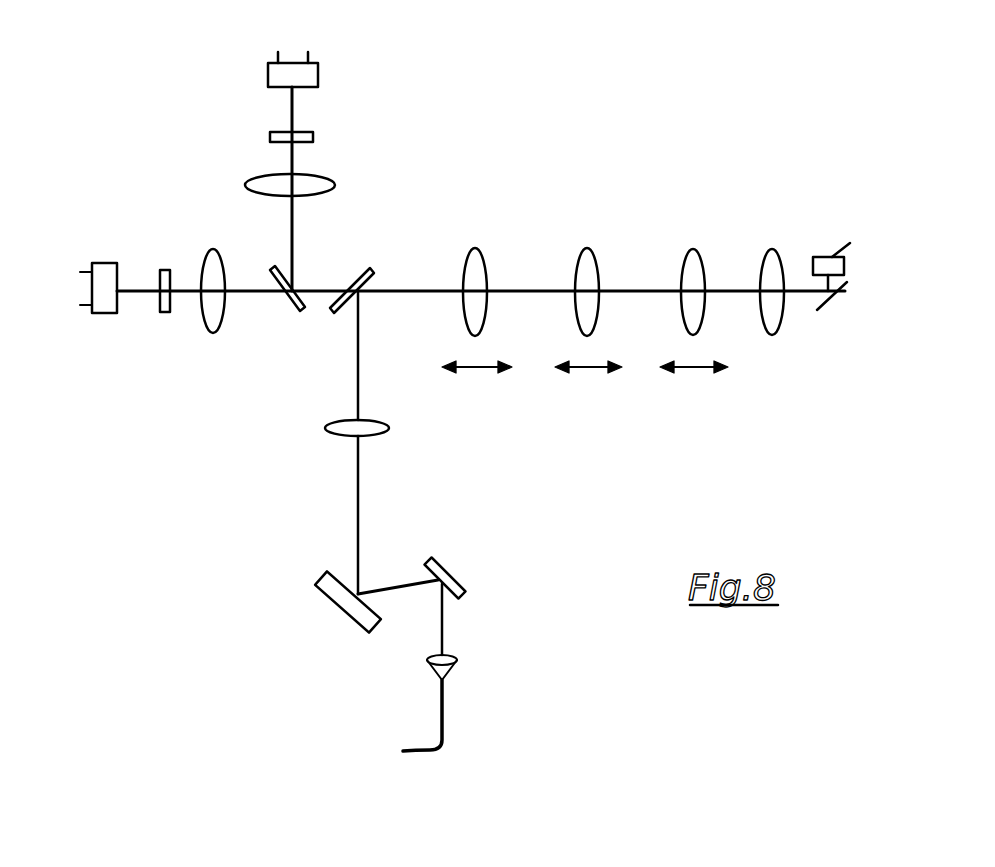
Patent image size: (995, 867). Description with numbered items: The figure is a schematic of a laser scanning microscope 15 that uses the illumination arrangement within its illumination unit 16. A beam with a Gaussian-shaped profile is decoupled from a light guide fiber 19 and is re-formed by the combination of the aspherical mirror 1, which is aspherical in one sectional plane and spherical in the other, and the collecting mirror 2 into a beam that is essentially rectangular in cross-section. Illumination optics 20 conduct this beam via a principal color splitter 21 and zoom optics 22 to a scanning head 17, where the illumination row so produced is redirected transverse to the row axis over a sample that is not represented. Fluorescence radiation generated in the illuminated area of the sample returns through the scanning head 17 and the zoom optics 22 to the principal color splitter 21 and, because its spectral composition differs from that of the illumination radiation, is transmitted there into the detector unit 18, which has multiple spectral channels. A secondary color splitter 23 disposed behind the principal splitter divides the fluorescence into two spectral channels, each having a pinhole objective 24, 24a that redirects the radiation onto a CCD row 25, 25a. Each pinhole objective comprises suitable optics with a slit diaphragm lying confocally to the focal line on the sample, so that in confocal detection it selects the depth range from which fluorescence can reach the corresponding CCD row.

The aspherical mirror 1 is at (462, 576).
The collecting mirror 2 is at (340, 613).
The laser scanning microscope 15 is at (644, 106).
The illumination unit 16 is at (260, 505).
The scanning head 17 is at (826, 256).
The detector unit 18 is at (100, 178).
The light guide fiber 19 is at (445, 720).
The illumination optics 20 is at (383, 432).
The principal color splitter 21 is at (372, 270).
The zoom optics 22 is at (620, 255).
The secondary color splitter 23 is at (290, 310).
The pinhole objective 24 is at (155, 335).
The pinhole objective 24a is at (242, 124).
The CCD row 25 is at (98, 313).
The CCD row 25a is at (318, 63).